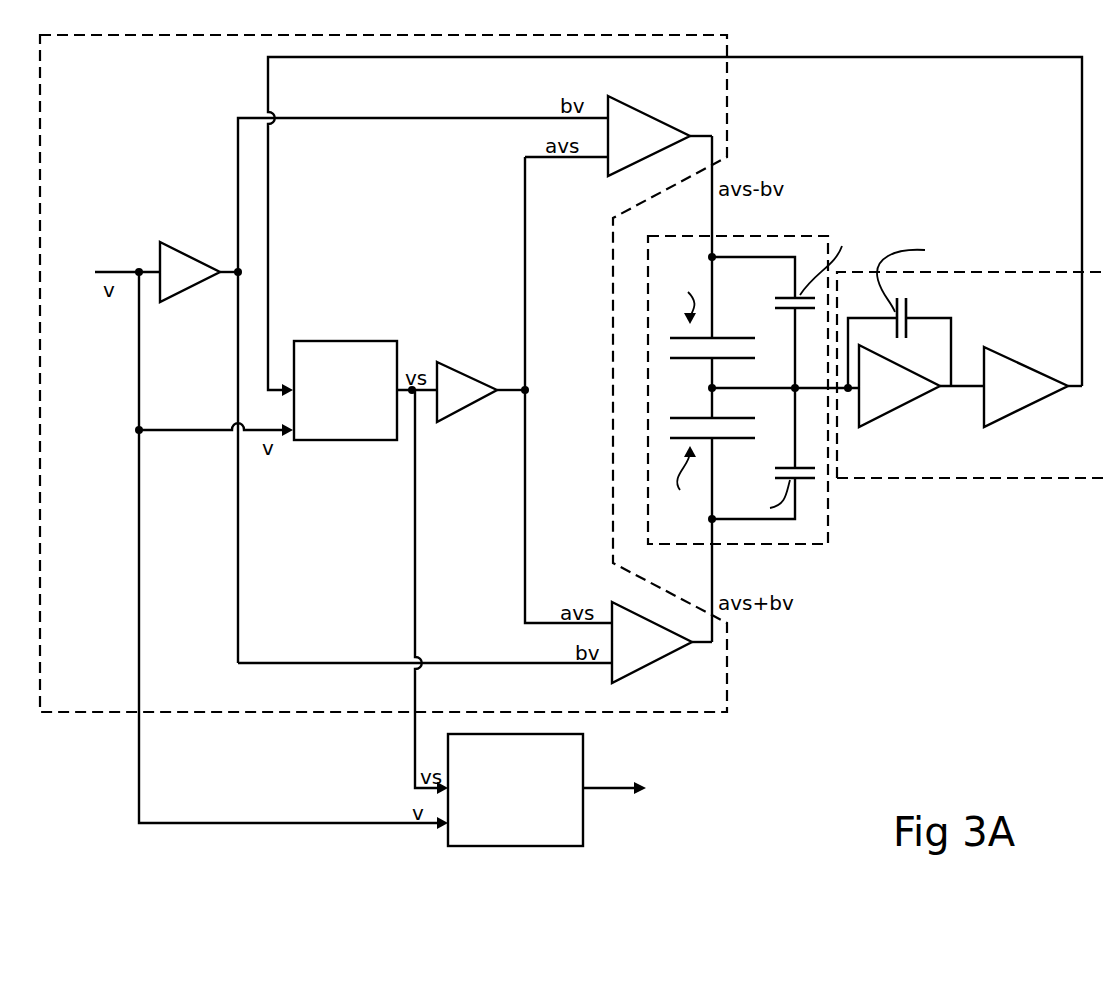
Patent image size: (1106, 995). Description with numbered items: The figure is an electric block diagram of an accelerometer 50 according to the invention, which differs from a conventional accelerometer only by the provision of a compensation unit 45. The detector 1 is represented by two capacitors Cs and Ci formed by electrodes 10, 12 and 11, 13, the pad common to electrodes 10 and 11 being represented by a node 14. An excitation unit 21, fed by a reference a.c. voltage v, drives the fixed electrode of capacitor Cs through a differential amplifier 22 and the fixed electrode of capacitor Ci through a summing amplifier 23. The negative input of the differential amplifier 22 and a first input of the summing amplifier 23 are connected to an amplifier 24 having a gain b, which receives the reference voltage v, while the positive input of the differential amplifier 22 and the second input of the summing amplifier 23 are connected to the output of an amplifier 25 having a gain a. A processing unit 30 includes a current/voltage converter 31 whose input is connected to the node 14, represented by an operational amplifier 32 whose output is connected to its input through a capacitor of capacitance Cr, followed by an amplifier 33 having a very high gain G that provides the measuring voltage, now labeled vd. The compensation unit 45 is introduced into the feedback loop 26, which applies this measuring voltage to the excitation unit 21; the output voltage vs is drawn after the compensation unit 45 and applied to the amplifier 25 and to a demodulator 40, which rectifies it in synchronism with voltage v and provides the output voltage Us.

The detector 1 is at (820, 545).
The electrode 10 is at (733, 359).
The electrode 11 is at (735, 418).
The electrode 12 is at (722, 337).
The electrode 13 is at (732, 439).
The node 14 is at (712, 388).
The excitation unit 21 is at (729, 665).
The differential amplifier 22 is at (642, 110).
The summing amplifier 23 is at (655, 662).
The amplifier 24 is at (184, 250).
The amplifier 25 is at (462, 372).
The feedback loop 26 is at (868, 57).
The processing unit 30 is at (978, 478).
The current/voltage converter 31 is at (881, 432).
The operational amplifier 32 is at (912, 406).
The amplifier 33 is at (1022, 408).
The demodulator 40 is at (583, 832).
The compensation unit 45 is at (330, 441).
The accelerometer 50 is at (955, 598).